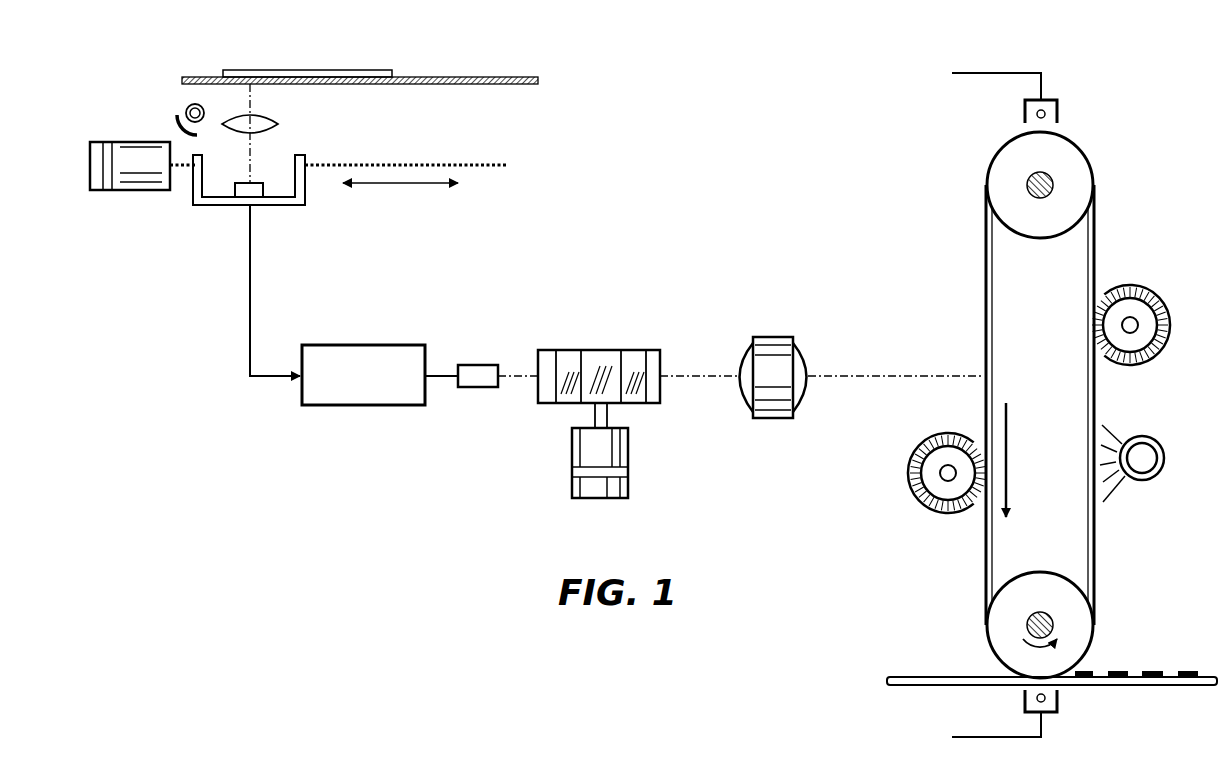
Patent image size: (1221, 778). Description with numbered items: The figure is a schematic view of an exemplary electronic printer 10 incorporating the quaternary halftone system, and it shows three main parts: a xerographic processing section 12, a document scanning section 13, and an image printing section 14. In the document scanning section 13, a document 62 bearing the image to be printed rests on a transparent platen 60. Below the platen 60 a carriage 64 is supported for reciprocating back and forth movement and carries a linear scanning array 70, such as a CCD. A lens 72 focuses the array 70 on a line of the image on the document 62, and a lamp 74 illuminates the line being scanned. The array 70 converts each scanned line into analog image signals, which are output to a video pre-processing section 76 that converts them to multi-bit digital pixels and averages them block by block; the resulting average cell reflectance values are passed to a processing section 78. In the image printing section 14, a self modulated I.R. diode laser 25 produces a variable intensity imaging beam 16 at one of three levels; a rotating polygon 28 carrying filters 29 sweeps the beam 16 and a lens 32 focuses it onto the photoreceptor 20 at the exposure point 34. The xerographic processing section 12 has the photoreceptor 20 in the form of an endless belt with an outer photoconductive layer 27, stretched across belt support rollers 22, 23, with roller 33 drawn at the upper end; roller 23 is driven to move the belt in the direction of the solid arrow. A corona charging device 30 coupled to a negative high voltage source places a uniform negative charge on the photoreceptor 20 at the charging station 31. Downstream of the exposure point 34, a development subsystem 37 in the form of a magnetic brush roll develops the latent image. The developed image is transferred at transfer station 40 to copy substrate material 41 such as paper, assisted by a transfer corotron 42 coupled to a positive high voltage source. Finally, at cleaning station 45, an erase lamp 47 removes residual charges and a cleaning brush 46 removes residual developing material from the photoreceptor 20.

The electronic printer 10 is at (747, 82).
The xerographic processing section 12 is at (977, 250).
The document scanning section 13 is at (449, 62).
The image printing section 14 is at (620, 293).
The imaging beam 16 is at (885, 375).
The photoreceptor 20 is at (1107, 210).
The drive belt support roller 22 is at (1042, 238).
The idler belt support roller 23 is at (1040, 572).
The self modulated I.R. diode laser 25 is at (485, 365).
The photoconductive layer 27 is at (1097, 543).
The rotating polygon 28 is at (587, 348).
The color filters 29 is at (612, 352).
The corona charging device 30 is at (1050, 101).
The charging station 31 is at (1072, 105).
The lens 32 is at (772, 337).
The upper roller 33 is at (1018, 207).
The exposure point 34 is at (983, 378).
The development subsystem 37 is at (910, 458).
The transfer station 40 is at (1093, 660).
The copy substrate material 41 is at (925, 677).
The transfer corotron 42 is at (1058, 702).
The cleaning station 45 is at (1110, 405).
The cleaning brush 46 is at (1167, 292).
The erase lamp 47 is at (1160, 448).
The transparent platen 60 is at (448, 85).
The document 62 is at (287, 70).
The carriage 64 is at (203, 207).
The linear scanning array 70 is at (258, 178).
The lens 72 is at (267, 117).
The lamp 74 is at (188, 107).
The video pre-processing section 76 is at (335, 407).
The processing section 78 is at (347, 398).